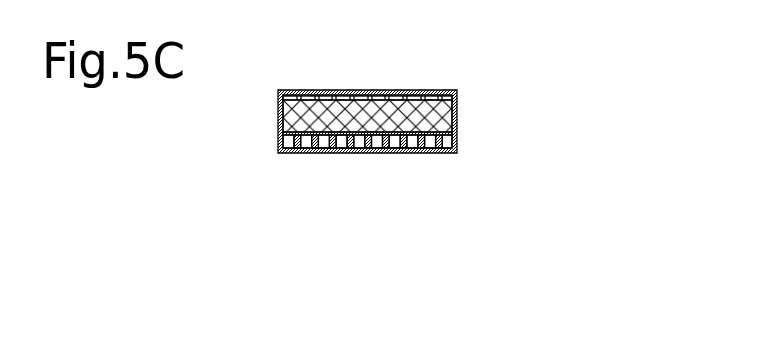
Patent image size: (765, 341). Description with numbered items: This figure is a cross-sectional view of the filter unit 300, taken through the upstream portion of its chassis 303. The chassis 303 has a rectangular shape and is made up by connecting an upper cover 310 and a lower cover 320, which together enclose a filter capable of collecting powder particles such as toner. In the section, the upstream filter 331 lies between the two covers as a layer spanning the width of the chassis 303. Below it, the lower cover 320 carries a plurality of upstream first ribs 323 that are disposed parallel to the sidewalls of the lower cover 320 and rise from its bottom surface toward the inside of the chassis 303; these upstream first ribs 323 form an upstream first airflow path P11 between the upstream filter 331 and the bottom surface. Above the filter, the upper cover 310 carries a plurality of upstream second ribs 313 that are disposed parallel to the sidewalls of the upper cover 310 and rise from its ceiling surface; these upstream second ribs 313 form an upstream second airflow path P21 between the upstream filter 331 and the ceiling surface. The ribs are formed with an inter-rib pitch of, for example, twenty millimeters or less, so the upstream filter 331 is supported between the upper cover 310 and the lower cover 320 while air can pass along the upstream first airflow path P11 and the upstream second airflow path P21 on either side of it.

The filter unit 300 is at (403, 166).
The chassis 303 is at (415, 131).
The upper cover 310 is at (383, 82).
The upstream second ribs 313 is at (339, 90).
The lower cover 320 is at (427, 189).
The upstream first ribs 323 is at (325, 150).
The upstream filter 331 is at (302, 113).
The upstream second airflow path P21 is at (395, 90).
The upstream first airflow path P11 is at (370, 153).